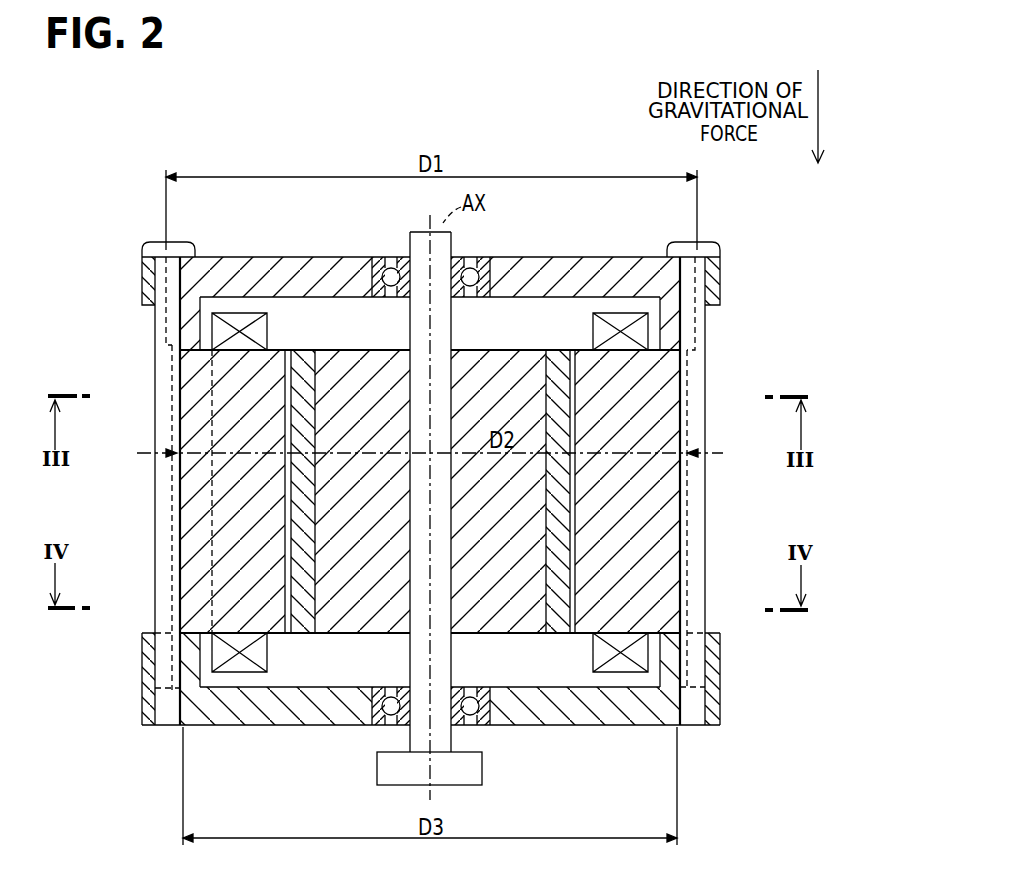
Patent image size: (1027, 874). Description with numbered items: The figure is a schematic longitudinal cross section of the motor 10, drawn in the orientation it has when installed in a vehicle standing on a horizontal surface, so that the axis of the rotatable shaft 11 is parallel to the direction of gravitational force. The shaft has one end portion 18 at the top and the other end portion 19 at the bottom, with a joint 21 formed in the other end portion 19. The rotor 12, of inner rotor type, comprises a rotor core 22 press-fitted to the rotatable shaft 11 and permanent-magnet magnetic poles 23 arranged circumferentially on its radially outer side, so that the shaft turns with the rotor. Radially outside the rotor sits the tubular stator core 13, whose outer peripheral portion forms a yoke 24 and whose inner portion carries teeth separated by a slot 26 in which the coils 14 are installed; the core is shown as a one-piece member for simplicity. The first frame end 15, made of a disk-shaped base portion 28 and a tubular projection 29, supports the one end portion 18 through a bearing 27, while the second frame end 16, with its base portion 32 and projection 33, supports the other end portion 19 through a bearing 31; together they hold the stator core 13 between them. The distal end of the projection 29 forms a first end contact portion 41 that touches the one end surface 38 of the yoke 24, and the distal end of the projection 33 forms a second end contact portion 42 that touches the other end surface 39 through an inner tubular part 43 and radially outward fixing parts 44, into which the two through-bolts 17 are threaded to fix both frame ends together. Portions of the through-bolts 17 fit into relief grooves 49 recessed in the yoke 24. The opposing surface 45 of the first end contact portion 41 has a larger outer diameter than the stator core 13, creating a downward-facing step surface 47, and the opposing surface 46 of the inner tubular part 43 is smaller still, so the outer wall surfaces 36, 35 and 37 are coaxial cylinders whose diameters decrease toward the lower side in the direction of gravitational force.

The motor 10 is at (129, 224).
The rotatable shaft 11 is at (415, 328).
The rotor 12 is at (550, 222).
The stator core 13 is at (238, 507).
The coils 14 is at (622, 662).
The first frame end 15 is at (248, 257).
The second frame end 16 is at (258, 733).
The through-bolts 17 is at (698, 510).
The one end portion 18 is at (408, 248).
The other end portion 19 is at (452, 738).
The joint 21 is at (483, 770).
The rotor core 22 is at (502, 365).
The magnetic poles 23 is at (558, 355).
The yoke 24 is at (188, 462).
The slot 26 is at (214, 565).
The bearing 27 is at (468, 270).
The base portion 28 is at (295, 267).
The projection 29 is at (190, 327).
The bearing 31 is at (390, 706).
The base portion 32 is at (307, 714).
The projection 33 is at (192, 678).
The outer wall surface 35 is at (687, 390).
The outer wall surface 36 is at (697, 333).
The outer wall surface 37 is at (683, 648).
The one end surface 38 is at (188, 343).
The other end surface 39 is at (183, 657).
The first end contact portion 41 is at (180, 345).
The second end contact portion 42 is at (73, 627).
The inner tubular part 43 is at (187, 640).
The fixing parts 44 is at (142, 650).
The opposing surface 45 is at (182, 372).
The opposing surface 46 is at (190, 634).
The step surface 47 is at (168, 357).
The relief grooves 49 is at (180, 415).